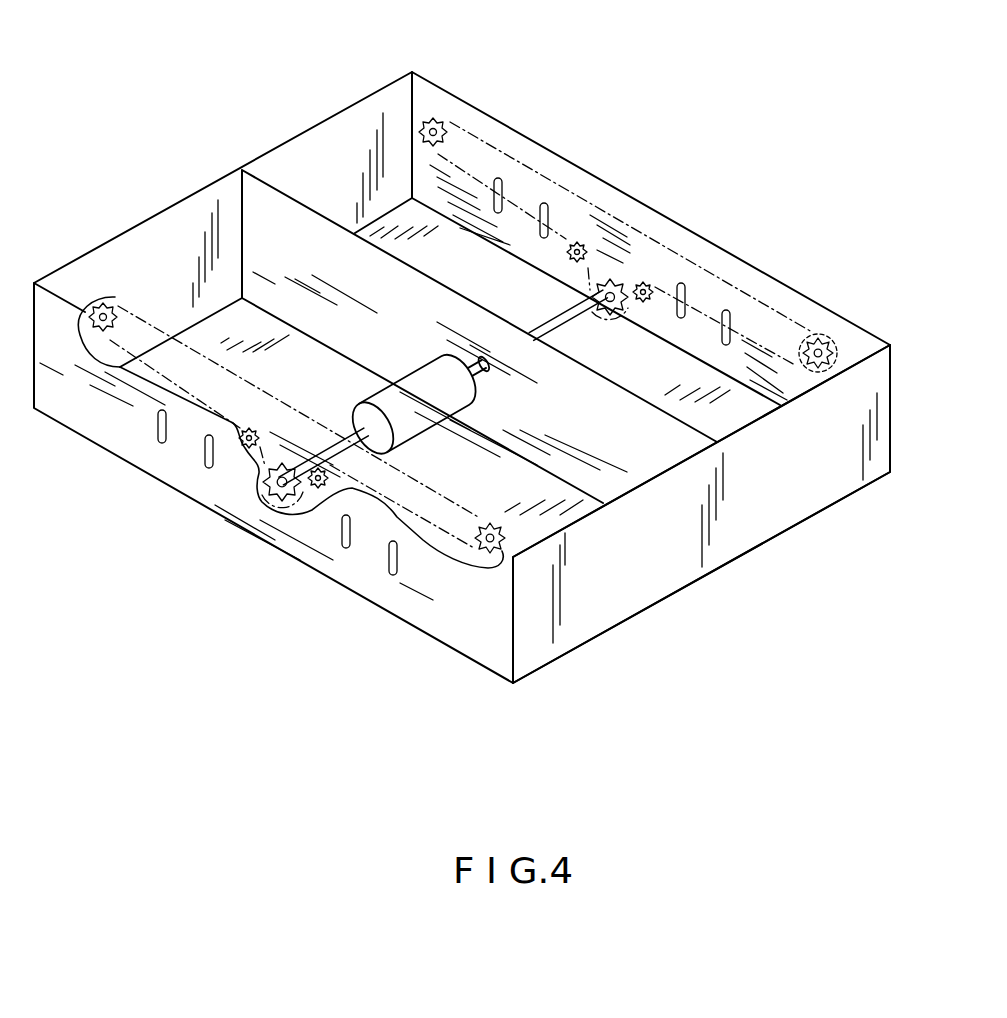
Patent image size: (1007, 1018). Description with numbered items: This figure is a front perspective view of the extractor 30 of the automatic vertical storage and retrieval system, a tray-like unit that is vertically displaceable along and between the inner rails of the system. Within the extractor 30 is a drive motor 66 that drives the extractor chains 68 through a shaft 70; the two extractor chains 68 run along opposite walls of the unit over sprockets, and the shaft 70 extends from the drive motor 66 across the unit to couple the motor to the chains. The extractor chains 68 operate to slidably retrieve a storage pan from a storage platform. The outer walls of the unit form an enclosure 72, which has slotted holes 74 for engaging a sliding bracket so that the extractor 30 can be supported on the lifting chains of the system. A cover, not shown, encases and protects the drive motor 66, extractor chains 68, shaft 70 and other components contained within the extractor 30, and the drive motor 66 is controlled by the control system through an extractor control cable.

The extractor 30 is at (462, 377).
The drive motor 66 is at (417, 421).
The extractor chains 68 is at (477, 133).
The shaft 70 is at (553, 329).
The enclosure 72 is at (763, 507).
The slotted holes 74 is at (203, 458).